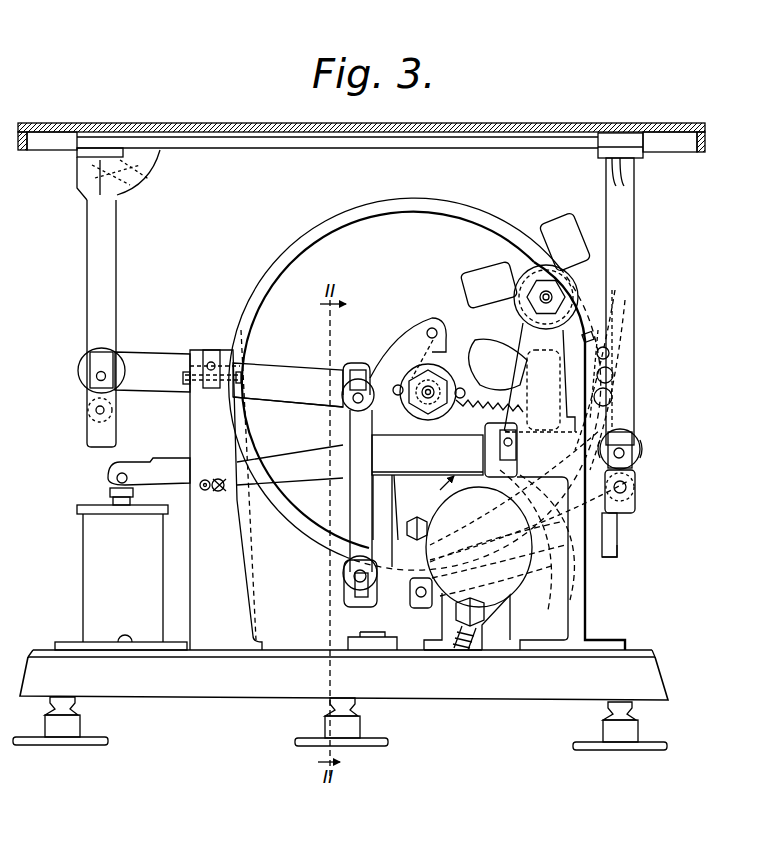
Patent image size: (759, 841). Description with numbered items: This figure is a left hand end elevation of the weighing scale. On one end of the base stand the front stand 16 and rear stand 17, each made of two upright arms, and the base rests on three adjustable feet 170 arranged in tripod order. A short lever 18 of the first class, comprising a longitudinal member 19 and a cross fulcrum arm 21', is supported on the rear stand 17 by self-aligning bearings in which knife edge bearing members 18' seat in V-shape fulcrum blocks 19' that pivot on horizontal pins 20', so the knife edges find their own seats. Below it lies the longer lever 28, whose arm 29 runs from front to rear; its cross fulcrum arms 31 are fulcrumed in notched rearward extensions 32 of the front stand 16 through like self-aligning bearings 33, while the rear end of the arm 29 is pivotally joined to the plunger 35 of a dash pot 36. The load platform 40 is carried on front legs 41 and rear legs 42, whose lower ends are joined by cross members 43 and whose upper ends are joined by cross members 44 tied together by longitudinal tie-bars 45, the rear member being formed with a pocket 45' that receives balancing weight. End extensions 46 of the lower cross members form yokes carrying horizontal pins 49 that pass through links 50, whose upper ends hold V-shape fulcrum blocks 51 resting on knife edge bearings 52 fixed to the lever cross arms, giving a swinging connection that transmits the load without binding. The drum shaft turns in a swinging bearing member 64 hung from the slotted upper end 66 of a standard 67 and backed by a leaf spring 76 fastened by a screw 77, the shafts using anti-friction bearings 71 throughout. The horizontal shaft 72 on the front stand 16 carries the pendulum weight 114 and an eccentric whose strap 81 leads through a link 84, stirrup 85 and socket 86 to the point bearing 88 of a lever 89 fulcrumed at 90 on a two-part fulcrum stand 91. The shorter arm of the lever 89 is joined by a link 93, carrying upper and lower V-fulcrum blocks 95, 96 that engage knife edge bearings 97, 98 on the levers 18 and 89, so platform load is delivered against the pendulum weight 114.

The front stand 16 is at (590, 597).
The rear stand 17 is at (226, 500).
The short lever 18 is at (229, 371).
The knife edge bearing members 18' is at (223, 344).
The longitudinal member 19 is at (288, 413).
The V-shape fulcrum blocks 19' is at (197, 402).
The horizontal pins 20' is at (164, 394).
The tie rod 21' is at (203, 342).
The longer lever 28 is at (406, 521).
The arm 29 is at (293, 459).
The cross fulcrum arms 31 is at (532, 428).
The rearward extensions 32 is at (489, 446).
The self alining bearings 33 is at (517, 447).
The plunger 35 is at (110, 493).
The dash pot 36 is at (97, 552).
The load platform 40 is at (487, 135).
The front legs 41 is at (636, 207).
The rear legs 42 is at (108, 242).
The cross members 43 is at (93, 430).
The cross members 44 is at (637, 161).
The tie-bars 45 is at (337, 136).
The pocket 45' is at (148, 175).
The end extensions 46 is at (628, 507).
The horizontal pins 49 is at (630, 480).
The links 50 is at (637, 472).
The V-shape fulcrum blocks 51 is at (637, 432).
The knife edge bearings 52 is at (640, 450).
The bearing member 64 is at (418, 424).
The upper end 66 is at (403, 320).
The standard 67 is at (384, 490).
The anti-friction bearings 71 is at (414, 375).
The horizontal shaft 72 is at (548, 300).
The leaf spring 76 is at (396, 476).
The screw 77 is at (397, 522).
The strap 81 is at (608, 357).
The link 84 is at (606, 403).
The stirrup 85 is at (617, 532).
The socket 86 is at (617, 552).
The point bearing 88 is at (600, 538).
The lever 89 is at (398, 560).
The fulcrum 90 is at (421, 600).
The fulcrum stand 91 is at (436, 640).
The link 93 is at (348, 505).
The upper V-fulcrum block 95 is at (356, 378).
The lower V-fulcrum block 96 is at (357, 590).
The knife edge bearing 97 is at (344, 394).
The knife edge bearing 98 is at (343, 578).
The pendulum weight 114 is at (507, 597).
The feet 170 is at (80, 724).